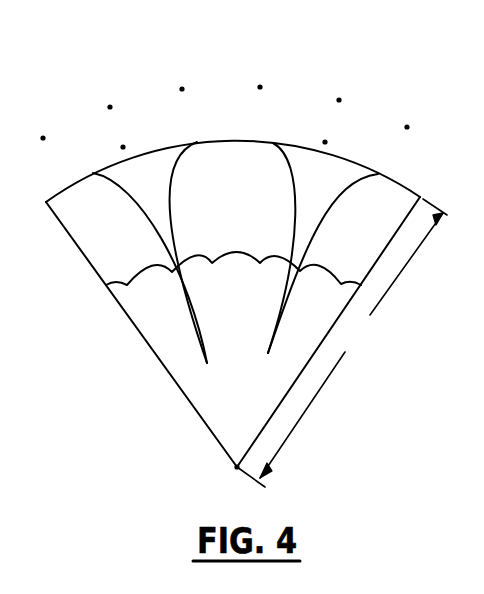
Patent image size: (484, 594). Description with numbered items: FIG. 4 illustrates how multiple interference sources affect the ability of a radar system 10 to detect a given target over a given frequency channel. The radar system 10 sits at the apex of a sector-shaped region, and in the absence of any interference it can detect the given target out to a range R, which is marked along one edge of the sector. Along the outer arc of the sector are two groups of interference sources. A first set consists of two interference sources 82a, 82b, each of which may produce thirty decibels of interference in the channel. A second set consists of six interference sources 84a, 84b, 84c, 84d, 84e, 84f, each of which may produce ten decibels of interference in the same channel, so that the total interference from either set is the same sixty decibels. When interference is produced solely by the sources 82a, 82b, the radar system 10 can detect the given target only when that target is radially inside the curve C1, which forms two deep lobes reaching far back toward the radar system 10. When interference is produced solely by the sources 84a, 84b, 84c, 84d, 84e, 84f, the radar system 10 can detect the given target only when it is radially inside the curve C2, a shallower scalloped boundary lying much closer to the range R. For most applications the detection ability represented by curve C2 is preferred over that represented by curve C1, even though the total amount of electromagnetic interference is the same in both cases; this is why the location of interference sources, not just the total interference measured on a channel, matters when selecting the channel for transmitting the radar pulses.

The radar system 10 is at (236, 468).
The interference source 82a is at (123, 146).
The interference source 82b is at (325, 141).
The interference source 84a is at (43, 137).
The interference source 84b is at (110, 106).
The interference source 84c is at (182, 88).
The interference source 84d is at (260, 86).
The interference source 84e is at (339, 99).
The interference source 84f is at (407, 126).
The curve C1 is at (296, 189).
The curve C2 is at (233, 252).
The range R is at (342, 343).